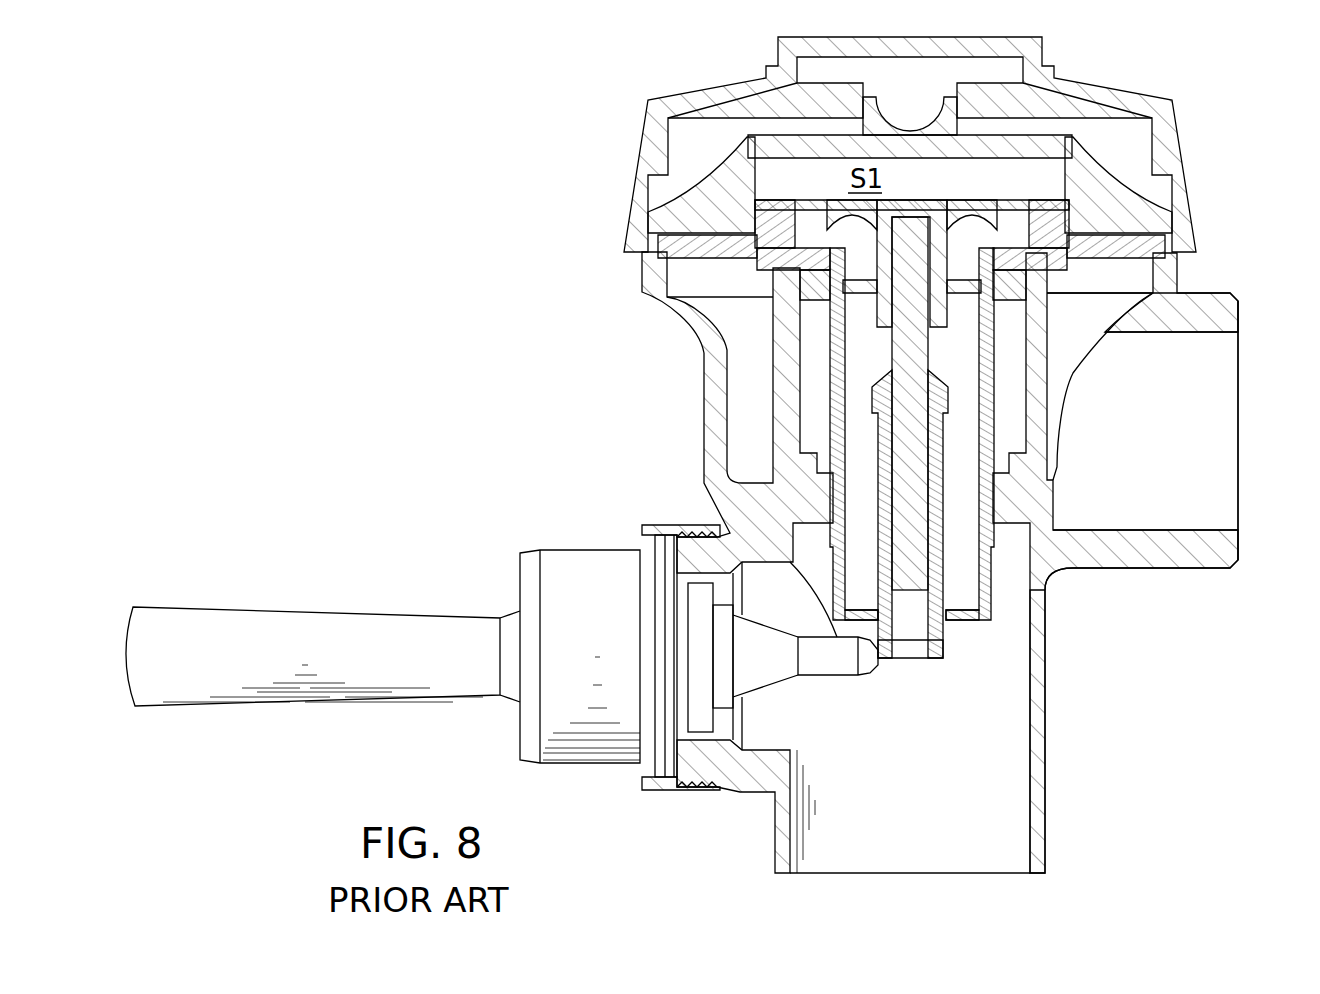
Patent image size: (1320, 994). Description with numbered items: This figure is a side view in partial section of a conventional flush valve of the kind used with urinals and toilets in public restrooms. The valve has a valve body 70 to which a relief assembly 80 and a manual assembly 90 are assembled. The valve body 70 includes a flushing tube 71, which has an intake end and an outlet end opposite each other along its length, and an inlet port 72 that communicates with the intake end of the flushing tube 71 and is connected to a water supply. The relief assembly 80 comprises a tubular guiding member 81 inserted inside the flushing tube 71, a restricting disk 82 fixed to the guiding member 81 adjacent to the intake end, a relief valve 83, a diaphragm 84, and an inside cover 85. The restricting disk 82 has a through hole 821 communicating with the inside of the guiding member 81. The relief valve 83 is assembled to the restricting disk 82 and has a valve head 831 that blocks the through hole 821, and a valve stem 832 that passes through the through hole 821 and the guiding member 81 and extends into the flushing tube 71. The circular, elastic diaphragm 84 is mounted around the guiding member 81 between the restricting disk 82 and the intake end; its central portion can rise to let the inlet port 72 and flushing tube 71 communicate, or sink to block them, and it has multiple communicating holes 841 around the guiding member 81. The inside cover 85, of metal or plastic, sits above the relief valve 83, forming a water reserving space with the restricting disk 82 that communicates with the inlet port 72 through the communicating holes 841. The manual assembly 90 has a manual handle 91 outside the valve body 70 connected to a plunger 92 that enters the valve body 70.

The valve body 70 is at (1057, 790).
The flushing tube 71 is at (1038, 698).
The inlet port 72 is at (1215, 294).
The relief assembly 80 is at (980, 635).
The guiding member 81 is at (982, 587).
The restricting disk 82 is at (775, 198).
The through hole 821 is at (882, 285).
The relief valve 83 is at (935, 200).
The valve head 831 is at (950, 210).
The valve stem 832 is at (943, 653).
The diaphragm 84 is at (695, 270).
The communicating holes 841 is at (1070, 258).
The inside cover 85 is at (1117, 210).
The manual assembly 90 is at (238, 739).
The manual handle 91 is at (268, 632).
The plunger 92 is at (820, 670).